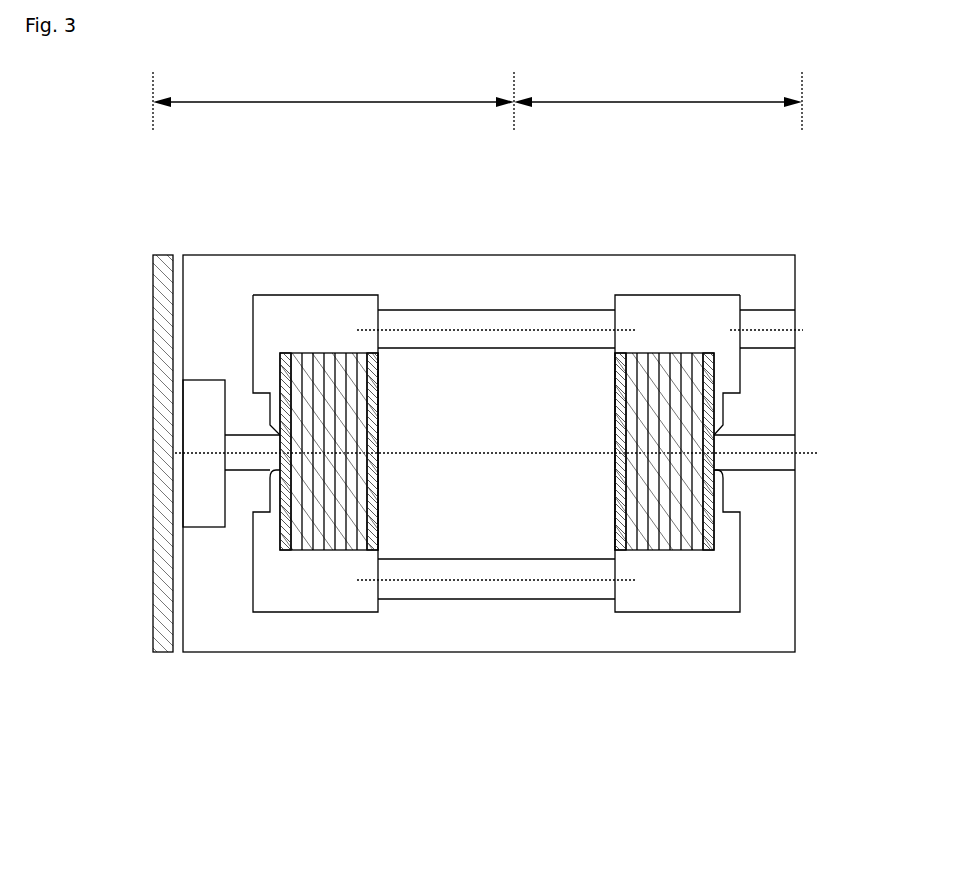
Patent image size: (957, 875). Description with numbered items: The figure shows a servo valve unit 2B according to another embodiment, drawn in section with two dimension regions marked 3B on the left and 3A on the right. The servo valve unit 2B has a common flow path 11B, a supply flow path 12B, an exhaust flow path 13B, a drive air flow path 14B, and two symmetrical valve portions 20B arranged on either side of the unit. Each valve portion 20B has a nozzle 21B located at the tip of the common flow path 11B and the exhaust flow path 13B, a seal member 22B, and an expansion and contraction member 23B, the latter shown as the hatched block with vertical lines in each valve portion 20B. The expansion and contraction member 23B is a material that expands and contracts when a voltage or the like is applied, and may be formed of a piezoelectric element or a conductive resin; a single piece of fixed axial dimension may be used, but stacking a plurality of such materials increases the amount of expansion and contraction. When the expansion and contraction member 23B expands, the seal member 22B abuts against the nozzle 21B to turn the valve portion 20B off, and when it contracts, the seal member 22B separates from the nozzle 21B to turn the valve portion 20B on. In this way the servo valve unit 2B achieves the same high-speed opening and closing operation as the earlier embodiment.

The servo valve unit 2B is at (478, 228).
The first region 3A is at (658, 97).
The second region 3B is at (333, 97).
The common flow path 11B is at (484, 590).
The supply flow path 12B is at (755, 463).
The exhaust flow path 13B is at (247, 462).
The drive air flow path 14B is at (770, 327).
The valve portion 20B is at (338, 639).
The nozzle 21B is at (265, 428).
The seal member 22B is at (287, 368).
The expansion and contraction member 23B is at (332, 368).